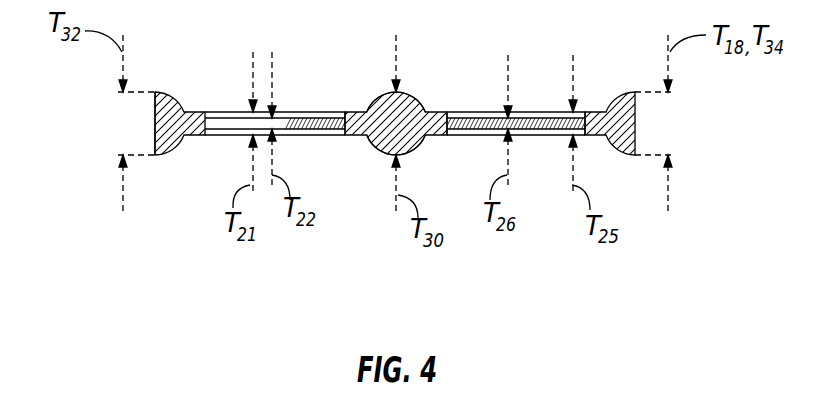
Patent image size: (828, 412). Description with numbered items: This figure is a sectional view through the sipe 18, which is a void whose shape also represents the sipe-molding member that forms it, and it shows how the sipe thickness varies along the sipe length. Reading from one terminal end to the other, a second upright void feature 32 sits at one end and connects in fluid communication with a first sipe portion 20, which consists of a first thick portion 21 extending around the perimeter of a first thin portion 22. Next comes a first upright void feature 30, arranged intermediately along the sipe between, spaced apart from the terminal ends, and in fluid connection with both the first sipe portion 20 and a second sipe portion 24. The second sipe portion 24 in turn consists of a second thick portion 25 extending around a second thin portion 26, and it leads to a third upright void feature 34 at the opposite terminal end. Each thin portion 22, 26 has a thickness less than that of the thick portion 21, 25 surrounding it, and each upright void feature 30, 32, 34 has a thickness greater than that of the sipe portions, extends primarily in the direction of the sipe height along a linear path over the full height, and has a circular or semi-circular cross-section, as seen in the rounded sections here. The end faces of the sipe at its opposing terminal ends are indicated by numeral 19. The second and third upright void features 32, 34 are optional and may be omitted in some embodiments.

The sipe 18 is at (392, 152).
The end of specimen 19 is at (160, 92).
The first sipe portion 20 is at (242, 112).
The first thick portion 21 is at (345, 112).
The first thin portion 22 is at (308, 112).
The second sipe portion 24 is at (525, 110).
The second thick portion 25 is at (433, 110).
The second thin portion 26 is at (468, 112).
The first upright void feature 30 is at (378, 96).
The second upright void feature 32 is at (172, 92).
The third upright void feature 34 is at (155, 258).